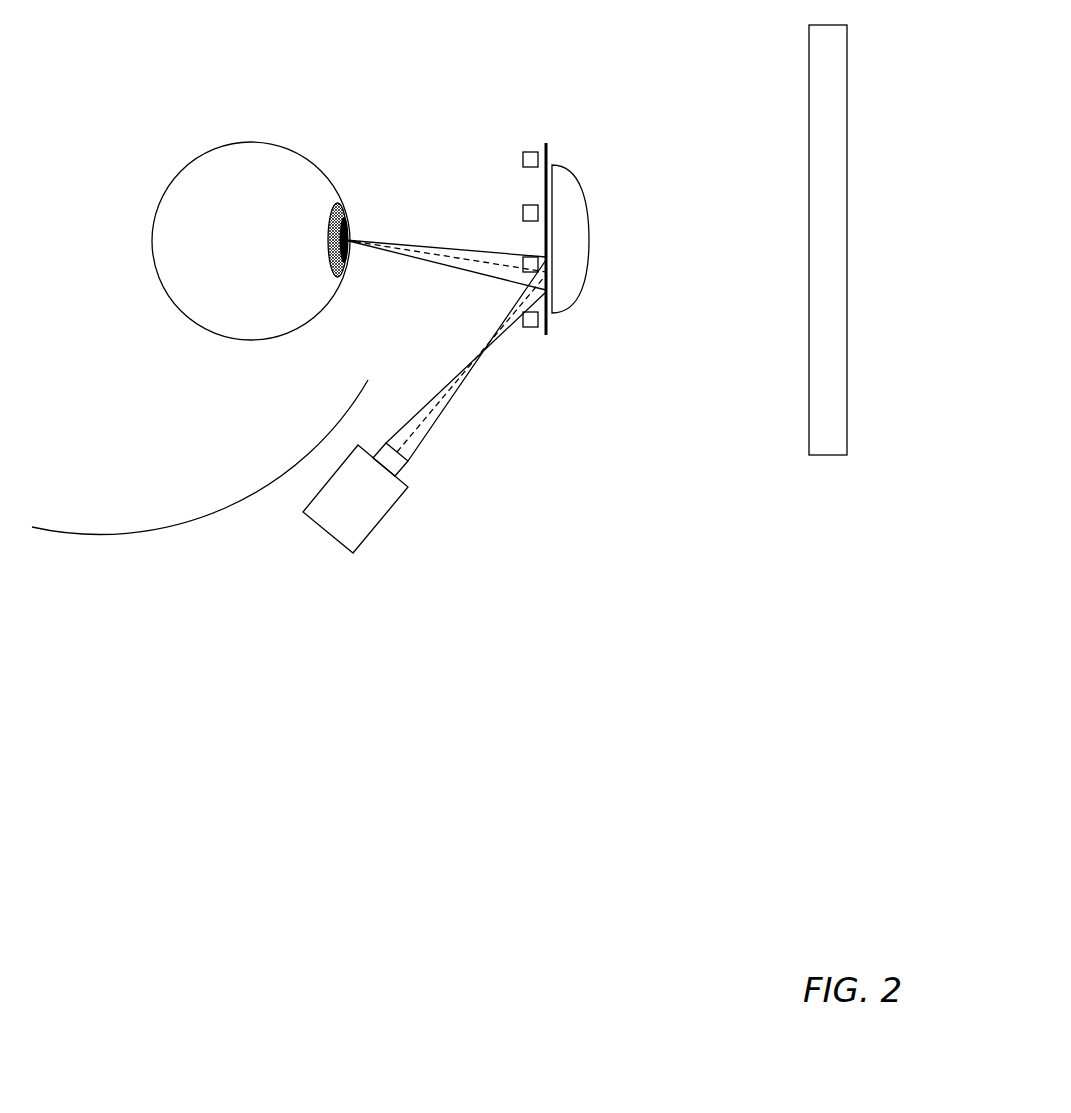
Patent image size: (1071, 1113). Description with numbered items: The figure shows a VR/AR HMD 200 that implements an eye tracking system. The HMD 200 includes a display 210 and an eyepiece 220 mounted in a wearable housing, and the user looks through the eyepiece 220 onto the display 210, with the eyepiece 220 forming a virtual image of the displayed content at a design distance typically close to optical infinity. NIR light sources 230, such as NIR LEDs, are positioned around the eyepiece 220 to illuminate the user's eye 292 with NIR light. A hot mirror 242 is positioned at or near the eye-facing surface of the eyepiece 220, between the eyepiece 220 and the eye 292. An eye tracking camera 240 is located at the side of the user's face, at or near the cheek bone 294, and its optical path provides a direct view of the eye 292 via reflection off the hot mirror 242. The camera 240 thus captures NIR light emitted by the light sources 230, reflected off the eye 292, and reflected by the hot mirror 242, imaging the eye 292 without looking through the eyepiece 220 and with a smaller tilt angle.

The VR/AR HMD 200 is at (827, 622).
The display 210 is at (847, 100).
The eyepiece 220 is at (582, 193).
The NIR light source 230 is at (523, 160).
The eye tracking camera 240 is at (372, 533).
The hot mirror 242 is at (548, 332).
The eye 292 is at (163, 190).
The cheek bone 294 is at (233, 498).